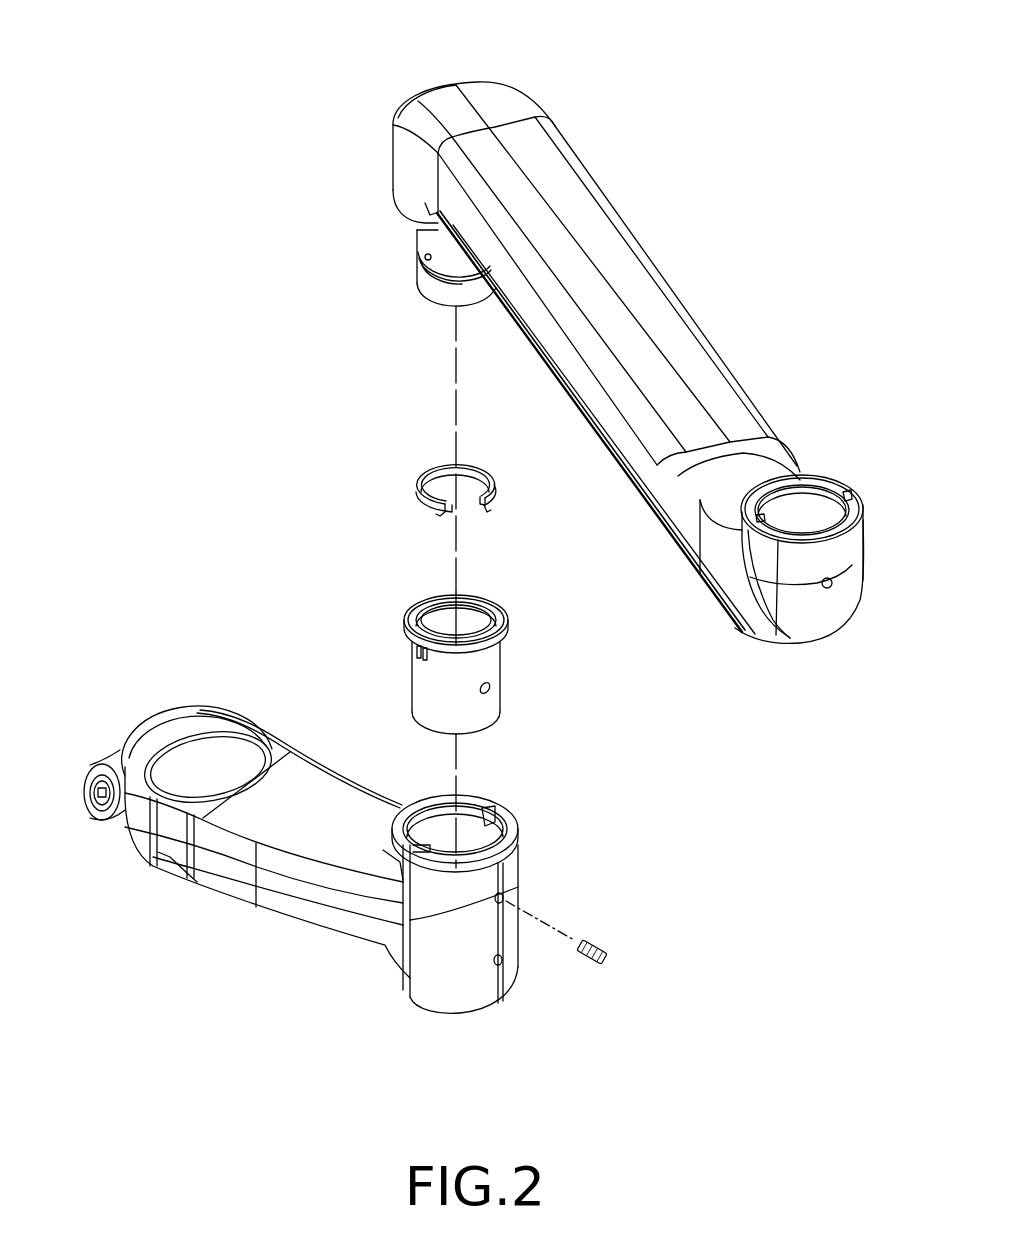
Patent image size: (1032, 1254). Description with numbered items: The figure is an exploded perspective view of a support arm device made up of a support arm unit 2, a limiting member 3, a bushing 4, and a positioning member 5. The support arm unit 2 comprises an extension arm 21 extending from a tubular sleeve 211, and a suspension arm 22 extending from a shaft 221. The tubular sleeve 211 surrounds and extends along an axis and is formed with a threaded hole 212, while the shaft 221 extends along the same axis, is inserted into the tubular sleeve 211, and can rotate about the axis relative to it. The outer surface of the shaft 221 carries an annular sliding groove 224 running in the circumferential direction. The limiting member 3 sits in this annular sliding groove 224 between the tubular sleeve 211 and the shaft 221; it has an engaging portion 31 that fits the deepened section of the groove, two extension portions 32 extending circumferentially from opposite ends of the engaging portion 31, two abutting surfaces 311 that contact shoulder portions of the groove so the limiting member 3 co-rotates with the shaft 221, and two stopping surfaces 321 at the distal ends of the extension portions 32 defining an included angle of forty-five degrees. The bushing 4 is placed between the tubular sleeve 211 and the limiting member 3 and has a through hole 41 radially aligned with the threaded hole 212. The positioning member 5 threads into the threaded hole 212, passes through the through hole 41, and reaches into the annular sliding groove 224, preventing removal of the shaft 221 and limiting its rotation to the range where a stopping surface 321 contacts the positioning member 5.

The support arm unit 2 is at (586, 351).
The suspension arm 22 is at (665, 278).
The shaft 221 is at (417, 230).
The annular sliding groove 224 is at (443, 267).
The limiting member 3 is at (442, 470).
The engaging portion 31 is at (443, 465).
The abutting surfaces 311 is at (428, 487).
The extension portions 32 is at (435, 513).
The stopping surfaces 321 is at (446, 522).
The bushing 4 is at (456, 664).
The through hole 41 is at (492, 687).
The extension arm 21 is at (356, 903).
The tubular sleeve 211 is at (453, 988).
The threaded hole 212 is at (503, 898).
The positioning member 5 is at (605, 967).